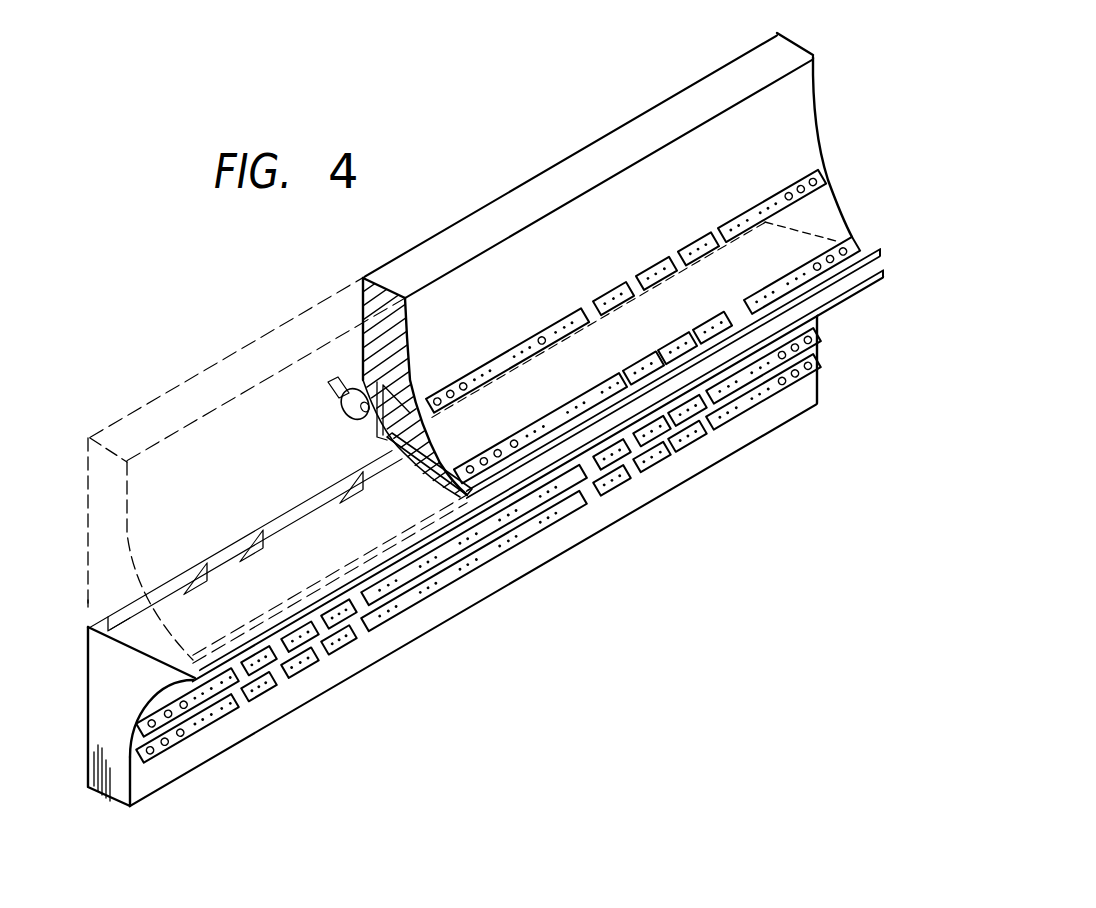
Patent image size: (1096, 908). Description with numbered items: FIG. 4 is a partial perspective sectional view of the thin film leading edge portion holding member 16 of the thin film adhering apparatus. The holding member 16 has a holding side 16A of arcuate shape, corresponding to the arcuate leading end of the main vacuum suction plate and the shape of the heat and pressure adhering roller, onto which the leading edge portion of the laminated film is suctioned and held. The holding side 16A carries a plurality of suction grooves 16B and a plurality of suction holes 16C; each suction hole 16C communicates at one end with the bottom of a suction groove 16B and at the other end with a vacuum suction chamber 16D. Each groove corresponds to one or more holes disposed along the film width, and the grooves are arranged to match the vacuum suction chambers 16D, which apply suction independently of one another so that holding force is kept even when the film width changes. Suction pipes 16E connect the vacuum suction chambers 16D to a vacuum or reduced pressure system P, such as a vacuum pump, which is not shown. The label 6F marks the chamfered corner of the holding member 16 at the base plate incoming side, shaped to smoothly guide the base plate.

The thin film leading edge portion holding member 16 is at (517, 210).
The holding side 16A is at (800, 150).
The suction grooves 16B is at (541, 338).
The suction holes 16C is at (405, 395).
The vacuum suction chambers 16D is at (387, 440).
The suction pipes 16E is at (335, 406).
The housing corner edge 6F is at (90, 607).
The vacuum or reduced pressure system P is at (328, 385).